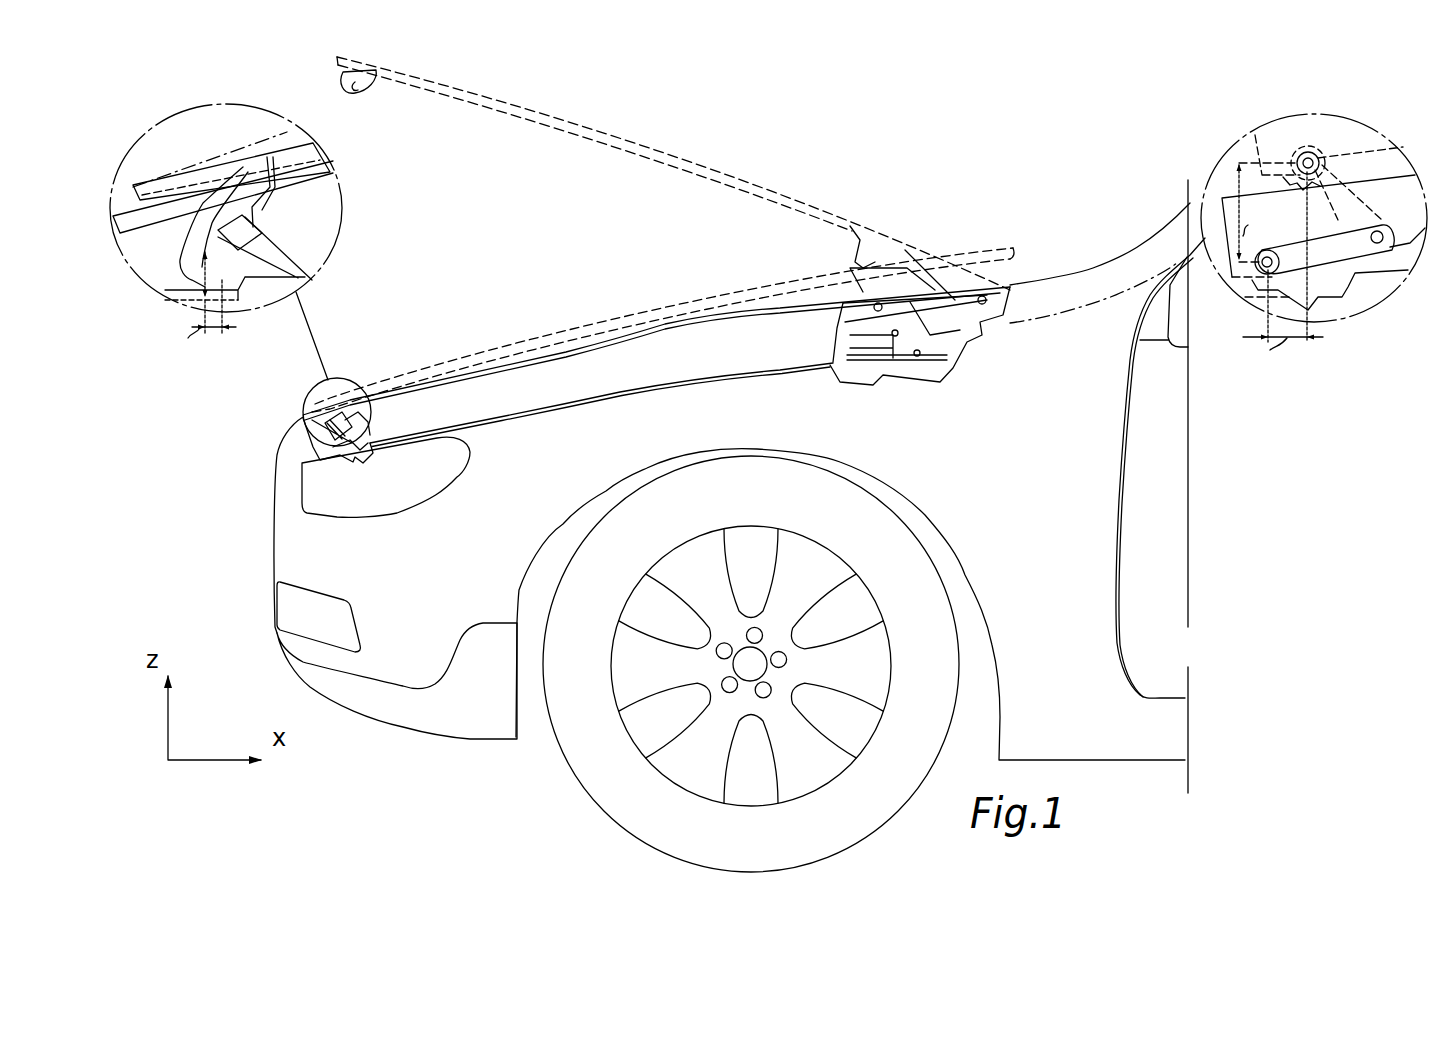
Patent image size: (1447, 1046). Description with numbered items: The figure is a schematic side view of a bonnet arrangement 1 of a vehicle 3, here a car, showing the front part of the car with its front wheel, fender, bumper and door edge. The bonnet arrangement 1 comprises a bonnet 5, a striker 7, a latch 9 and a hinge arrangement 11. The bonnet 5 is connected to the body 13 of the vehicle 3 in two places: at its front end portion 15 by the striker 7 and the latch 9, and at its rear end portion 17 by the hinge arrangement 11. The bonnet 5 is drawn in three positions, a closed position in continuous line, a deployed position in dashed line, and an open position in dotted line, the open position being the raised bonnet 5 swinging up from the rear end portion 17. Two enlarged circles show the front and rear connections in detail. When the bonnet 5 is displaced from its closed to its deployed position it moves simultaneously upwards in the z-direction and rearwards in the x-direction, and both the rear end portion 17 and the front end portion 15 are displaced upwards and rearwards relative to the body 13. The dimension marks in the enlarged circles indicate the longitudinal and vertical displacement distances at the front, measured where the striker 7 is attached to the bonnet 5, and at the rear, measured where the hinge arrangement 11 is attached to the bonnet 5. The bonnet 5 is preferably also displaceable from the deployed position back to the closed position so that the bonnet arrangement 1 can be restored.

The bonnet arrangement 1 is at (410, 296).
The vehicle 3 is at (820, 88).
The bonnet 5 is at (607, 131).
The striker 7 is at (343, 74).
The latch 9 is at (350, 436).
The hinge arrangement 11 is at (815, 348).
The body 13 is at (912, 368).
The front end portion 15 is at (297, 374).
The rear end portion 17 is at (897, 211).